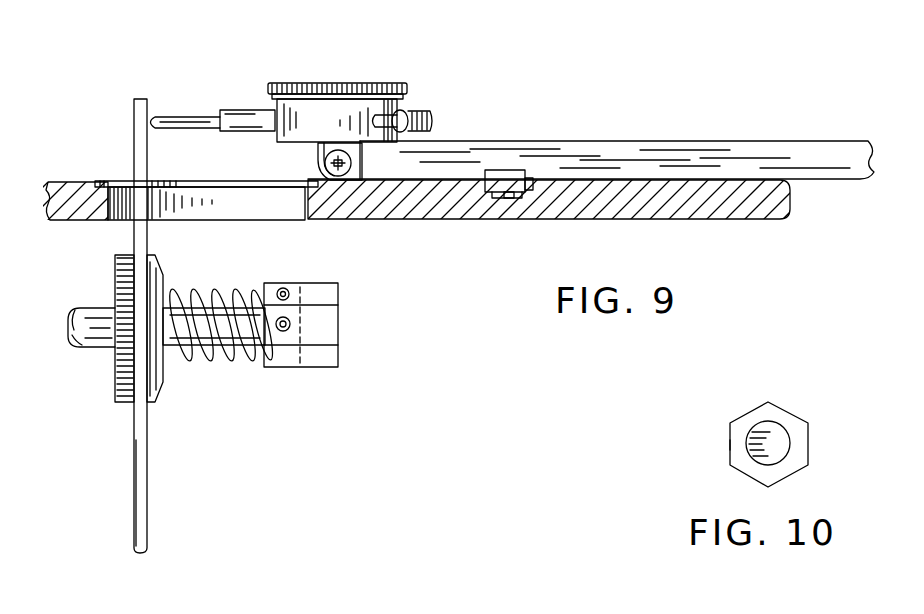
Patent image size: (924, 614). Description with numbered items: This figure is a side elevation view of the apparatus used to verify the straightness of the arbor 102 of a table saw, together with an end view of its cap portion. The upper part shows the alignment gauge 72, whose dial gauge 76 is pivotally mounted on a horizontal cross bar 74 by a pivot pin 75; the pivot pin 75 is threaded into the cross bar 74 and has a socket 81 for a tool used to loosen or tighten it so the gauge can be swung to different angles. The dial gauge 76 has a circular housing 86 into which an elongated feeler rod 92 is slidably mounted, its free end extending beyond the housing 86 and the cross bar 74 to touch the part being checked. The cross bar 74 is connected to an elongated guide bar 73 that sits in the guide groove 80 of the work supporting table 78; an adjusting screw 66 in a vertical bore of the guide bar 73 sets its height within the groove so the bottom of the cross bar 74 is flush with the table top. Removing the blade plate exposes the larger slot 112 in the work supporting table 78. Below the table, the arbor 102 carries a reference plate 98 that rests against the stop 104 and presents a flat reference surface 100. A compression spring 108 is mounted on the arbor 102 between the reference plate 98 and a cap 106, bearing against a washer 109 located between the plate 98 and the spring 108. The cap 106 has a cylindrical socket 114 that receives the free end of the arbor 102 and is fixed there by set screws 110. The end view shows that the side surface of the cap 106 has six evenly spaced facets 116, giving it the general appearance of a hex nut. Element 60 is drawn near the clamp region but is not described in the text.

In FIG. 9, the stop 60 is at (533, 186).
In FIG. 9, the adjusting screw 66 is at (509, 199).
In FIG. 9, the alignment gauge 72 is at (442, 92).
In FIG. 9, the guide bar 73 is at (504, 174).
In FIG. 9, the cross bar 74 is at (630, 149).
In FIG. 9, the pivot pin 75 is at (320, 150).
In FIG. 9, the dial gauge 76 is at (313, 73).
In FIG. 9, the work supporting table 78 is at (729, 208).
In FIG. 9, the guide groove 80 is at (486, 196).
In FIG. 9, the socket 81 is at (325, 163).
In FIG. 9, the circular housing 86 is at (283, 113).
In FIG. 9, the feeler rod 92 is at (172, 118).
In FIG. 9, the reference plate 98 is at (140, 459).
In FIG. 9, the reference surface 100 is at (148, 518).
In FIG. 9, the arbor 102 is at (93, 318).
In FIG. 9, the stop 104 is at (122, 358).
In FIG. 9, the cap 106 is at (330, 333).
In FIG. 10, the cap 106 is at (802, 426).
In FIG. 9, the compression spring 108 is at (227, 328).
In FIG. 9, the washer 109 is at (153, 393).
In FIG. 9, the set screws 110 is at (287, 322).
In FIG. 9, the slot 112 is at (108, 204).
In FIG. 10, the cylindrical socket 114 is at (752, 430).
In FIG. 10, the facets 116 is at (740, 474).